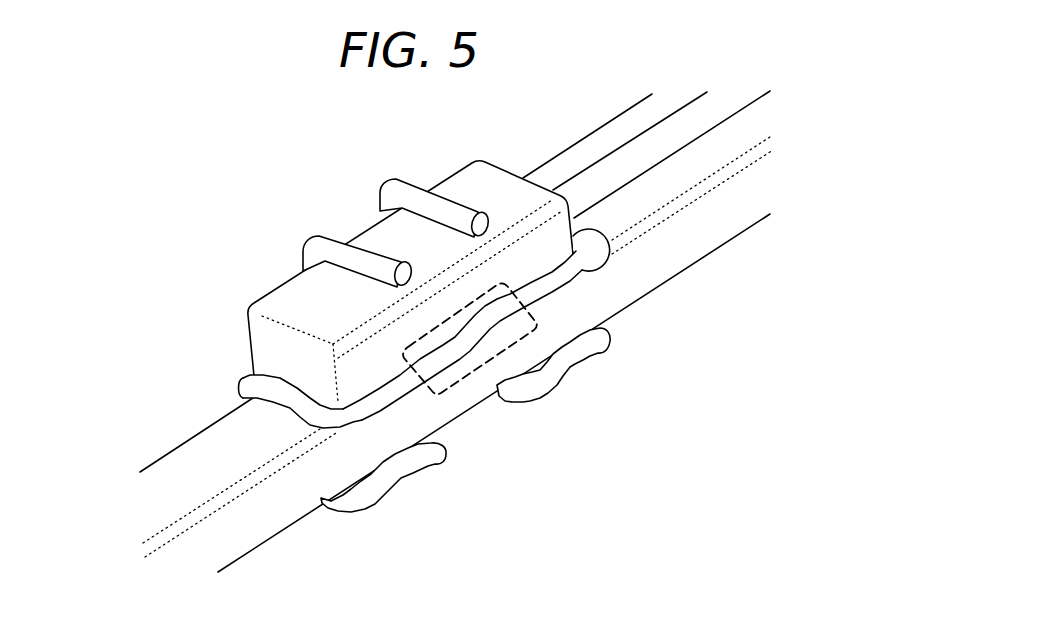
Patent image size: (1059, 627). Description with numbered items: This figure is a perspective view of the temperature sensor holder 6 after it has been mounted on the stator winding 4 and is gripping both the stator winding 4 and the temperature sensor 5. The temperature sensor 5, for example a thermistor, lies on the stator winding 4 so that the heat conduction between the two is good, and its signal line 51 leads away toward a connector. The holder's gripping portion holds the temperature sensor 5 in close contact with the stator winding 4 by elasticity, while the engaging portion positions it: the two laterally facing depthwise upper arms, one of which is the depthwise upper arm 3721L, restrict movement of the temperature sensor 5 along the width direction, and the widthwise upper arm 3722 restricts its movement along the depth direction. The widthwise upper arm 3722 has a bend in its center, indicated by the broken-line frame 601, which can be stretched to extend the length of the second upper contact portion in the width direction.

The stator winding 4 is at (446, 322).
The signal line 51 is at (622, 132).
The temperature sensor 5 is at (295, 297).
The temperature sensor holder 6 is at (433, 390).
The broken-line frame 601 is at (483, 368).
The depthwise upper arm 3721L is at (272, 390).
The widthwise upper arm 3722 is at (385, 393).